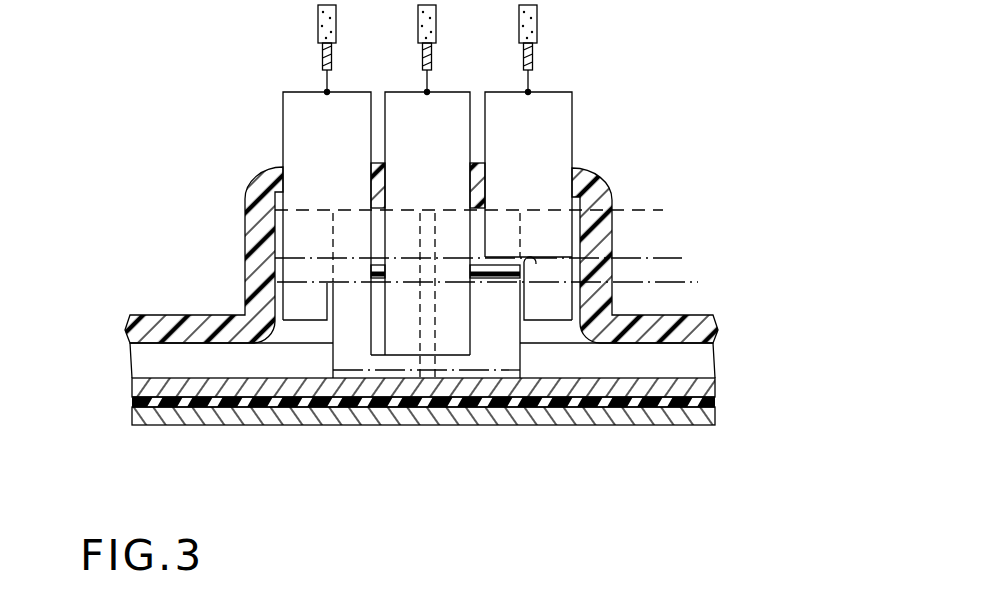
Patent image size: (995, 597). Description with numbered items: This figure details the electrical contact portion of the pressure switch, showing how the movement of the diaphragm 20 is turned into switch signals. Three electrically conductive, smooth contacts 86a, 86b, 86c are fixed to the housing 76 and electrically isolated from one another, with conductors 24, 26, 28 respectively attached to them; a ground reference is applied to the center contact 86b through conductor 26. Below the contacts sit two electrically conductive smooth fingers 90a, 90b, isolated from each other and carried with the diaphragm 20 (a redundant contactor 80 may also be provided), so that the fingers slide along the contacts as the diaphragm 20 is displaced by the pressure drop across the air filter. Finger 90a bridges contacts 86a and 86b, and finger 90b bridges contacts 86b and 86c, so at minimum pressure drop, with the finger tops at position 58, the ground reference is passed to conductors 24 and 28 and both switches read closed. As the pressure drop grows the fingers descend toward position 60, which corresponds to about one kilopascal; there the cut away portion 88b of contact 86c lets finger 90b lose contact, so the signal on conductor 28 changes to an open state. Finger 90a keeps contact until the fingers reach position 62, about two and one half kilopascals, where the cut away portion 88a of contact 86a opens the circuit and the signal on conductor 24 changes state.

The diaphragm 20 is at (658, 427).
The conductor 24 is at (318, 30).
The conductor 26 is at (418, 30).
The conductor 28 is at (536, 32).
The position 58 is at (652, 210).
The position 60 is at (652, 258).
The position 62 is at (678, 283).
The housing 76 is at (255, 183).
The redundant contact 80 is at (527, 361).
The contact 86a is at (293, 115).
The contact 86b is at (445, 118).
The contact 86c is at (552, 118).
The cut away portion 88a is at (327, 283).
The cut away portion 88b is at (528, 266).
The finger 90a is at (347, 347).
The finger 90b is at (493, 348).